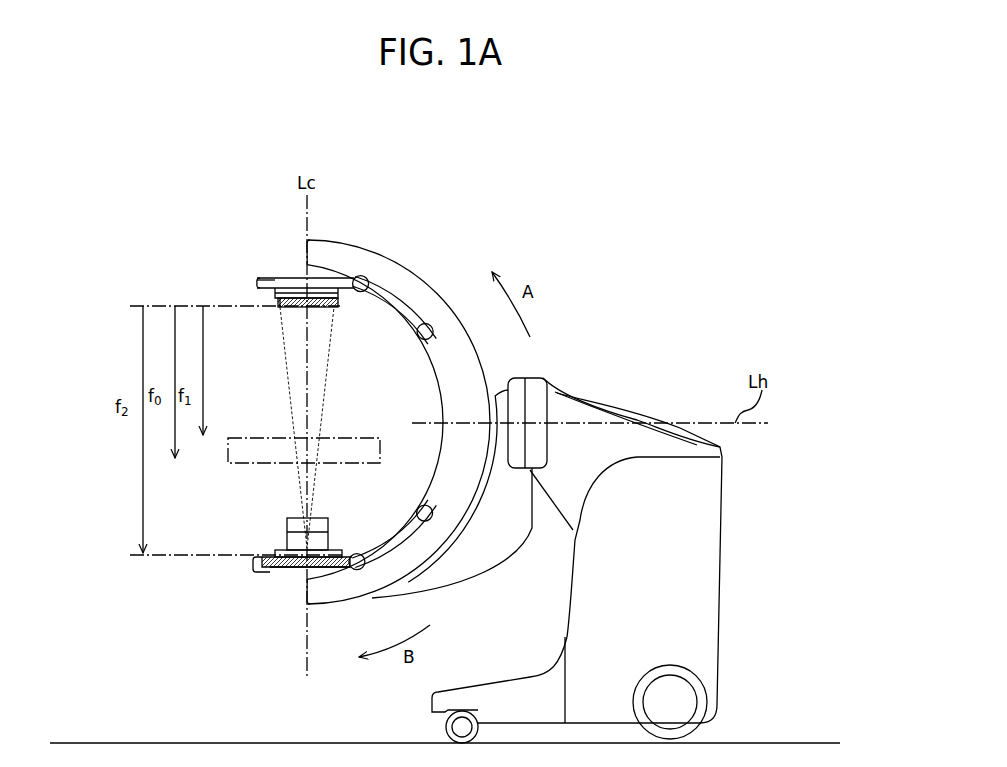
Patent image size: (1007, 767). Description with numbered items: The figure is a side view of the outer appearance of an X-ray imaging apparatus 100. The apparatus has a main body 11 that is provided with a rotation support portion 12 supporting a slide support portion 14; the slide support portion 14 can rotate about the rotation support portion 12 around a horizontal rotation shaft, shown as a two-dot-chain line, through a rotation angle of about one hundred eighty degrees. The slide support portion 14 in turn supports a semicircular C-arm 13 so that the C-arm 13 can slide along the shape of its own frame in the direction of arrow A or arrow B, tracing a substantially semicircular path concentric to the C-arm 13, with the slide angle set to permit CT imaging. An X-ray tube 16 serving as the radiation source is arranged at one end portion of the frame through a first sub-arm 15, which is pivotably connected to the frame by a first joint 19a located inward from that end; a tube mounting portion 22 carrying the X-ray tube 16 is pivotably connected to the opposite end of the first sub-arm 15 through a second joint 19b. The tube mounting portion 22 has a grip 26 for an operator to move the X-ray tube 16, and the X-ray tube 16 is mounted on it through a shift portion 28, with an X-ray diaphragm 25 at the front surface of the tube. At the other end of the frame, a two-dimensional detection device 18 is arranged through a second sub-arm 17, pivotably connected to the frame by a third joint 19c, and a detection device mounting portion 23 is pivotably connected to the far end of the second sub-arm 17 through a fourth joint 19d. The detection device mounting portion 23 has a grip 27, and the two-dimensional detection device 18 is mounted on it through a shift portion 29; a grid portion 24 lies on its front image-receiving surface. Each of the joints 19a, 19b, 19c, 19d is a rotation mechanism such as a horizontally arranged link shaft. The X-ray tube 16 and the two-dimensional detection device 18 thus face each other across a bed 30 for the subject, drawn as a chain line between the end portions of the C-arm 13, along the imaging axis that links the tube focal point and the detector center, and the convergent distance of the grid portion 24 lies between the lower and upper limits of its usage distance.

The X-ray imaging apparatus 100 is at (594, 250).
The main body 11 is at (706, 598).
The rotation support portion 12 is at (548, 380).
The C-arm 13 is at (473, 378).
The slide support portion 14 is at (502, 542).
The first sub-arm 15 is at (376, 555).
The X-ray tube 16 is at (284, 541).
The second sub-arm 17 is at (385, 295).
The two-dimensional detection device 18 is at (278, 303).
The first joint 19a is at (430, 522).
The second joint 19b is at (352, 570).
The third joint 19c is at (425, 324).
The fourth joint 19d is at (360, 277).
The tube mounting portion 22 is at (288, 568).
The detection device mounting portion 23 is at (295, 280).
The grid portion 24 is at (292, 307).
The X-ray diaphragm 25 is at (285, 523).
The grip 26 is at (258, 571).
The grip 27 is at (257, 283).
The shift portion 28 is at (253, 562).
The shift portion 29 is at (277, 288).
The bed 30 is at (228, 450).